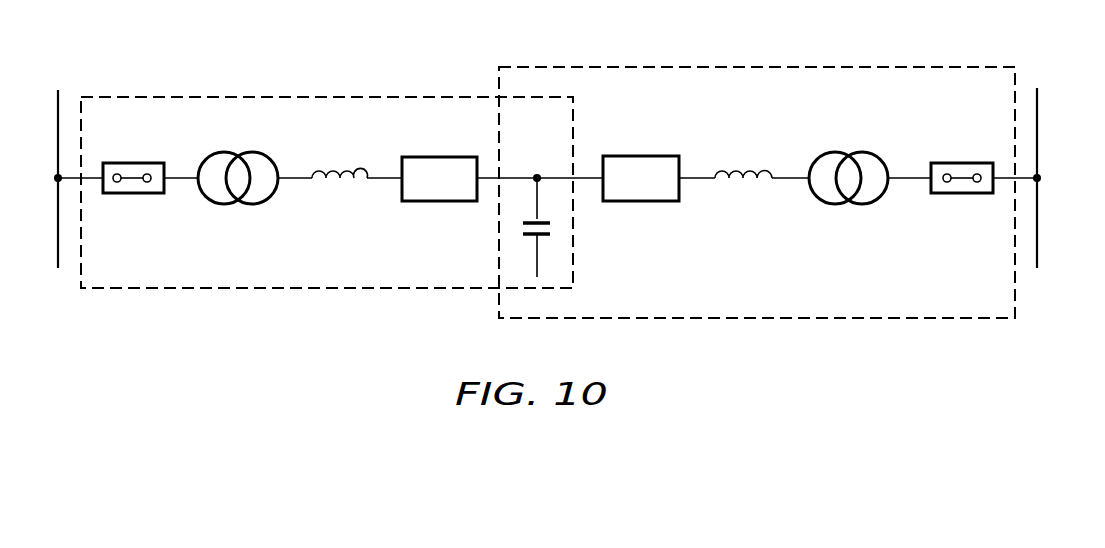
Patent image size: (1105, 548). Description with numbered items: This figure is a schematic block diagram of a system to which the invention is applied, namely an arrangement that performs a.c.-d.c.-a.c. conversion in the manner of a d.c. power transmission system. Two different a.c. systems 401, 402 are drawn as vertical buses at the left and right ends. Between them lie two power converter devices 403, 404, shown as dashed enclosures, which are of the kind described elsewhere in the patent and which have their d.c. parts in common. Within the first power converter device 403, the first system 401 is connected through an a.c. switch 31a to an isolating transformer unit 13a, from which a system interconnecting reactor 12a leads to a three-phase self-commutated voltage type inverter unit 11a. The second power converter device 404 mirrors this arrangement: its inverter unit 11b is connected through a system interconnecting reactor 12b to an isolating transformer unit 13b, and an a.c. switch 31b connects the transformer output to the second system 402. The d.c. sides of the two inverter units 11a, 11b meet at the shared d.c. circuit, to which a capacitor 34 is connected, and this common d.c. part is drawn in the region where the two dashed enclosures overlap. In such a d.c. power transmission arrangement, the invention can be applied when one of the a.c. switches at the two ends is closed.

The inverter unit 11a is at (423, 190).
The inverter unit 11b is at (625, 188).
The system interconnecting reactor 12a is at (335, 183).
The system interconnecting reactor 12b is at (738, 183).
The isolating transformer unit 13a is at (230, 205).
The isolating transformer unit 13b is at (840, 205).
The a.c. switch 31a is at (126, 187).
The a.c. switch 31b is at (957, 183).
The capacitor 34 is at (547, 238).
The system 401 is at (58, 240).
The system 402 is at (1037, 247).
The power converter device 403 is at (288, 289).
The power converter device 404 is at (785, 318).